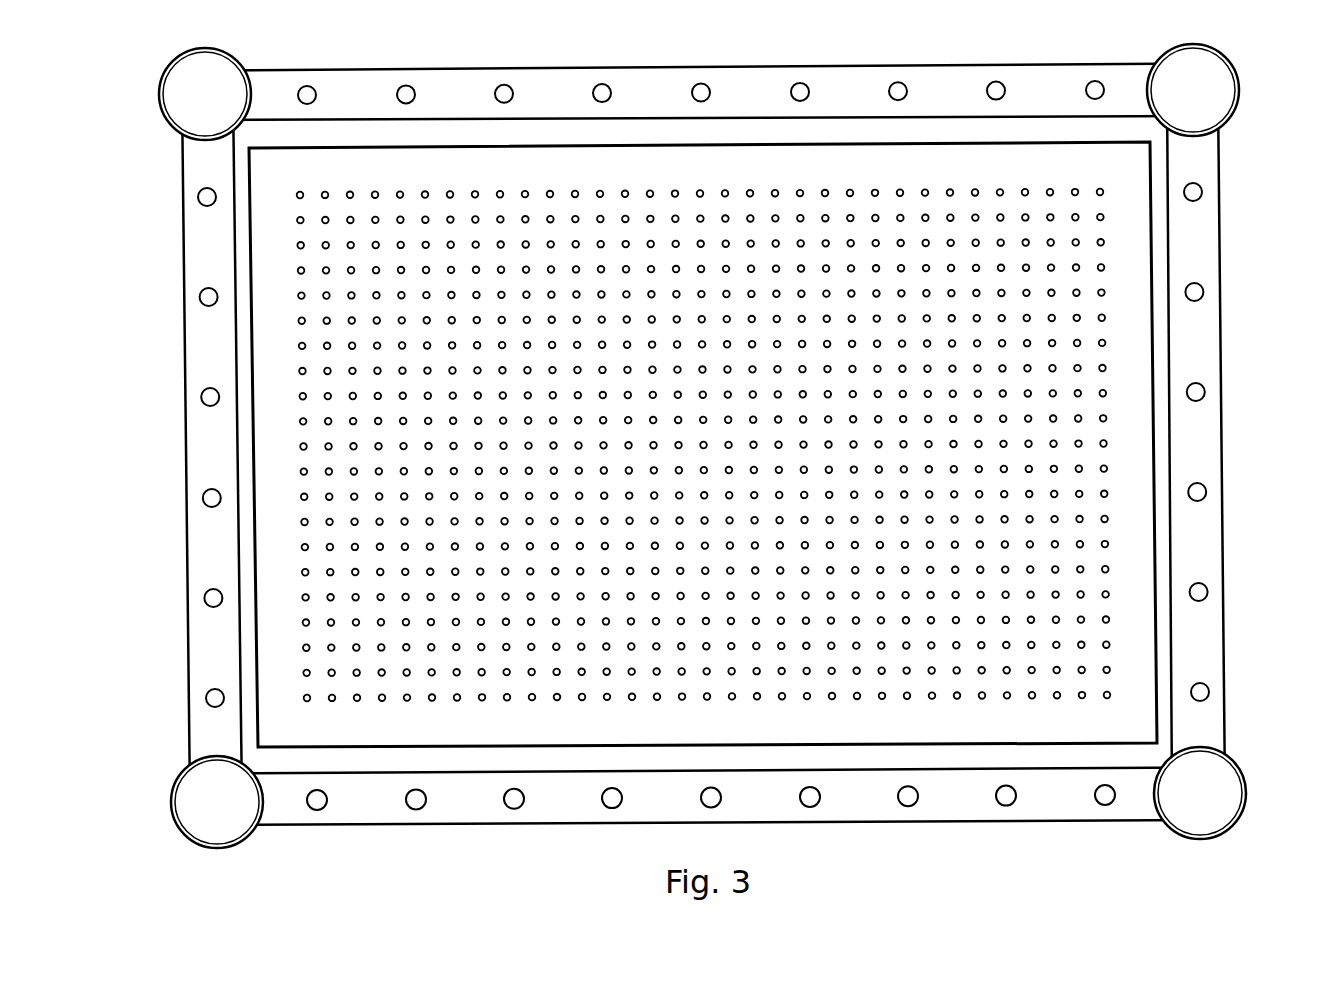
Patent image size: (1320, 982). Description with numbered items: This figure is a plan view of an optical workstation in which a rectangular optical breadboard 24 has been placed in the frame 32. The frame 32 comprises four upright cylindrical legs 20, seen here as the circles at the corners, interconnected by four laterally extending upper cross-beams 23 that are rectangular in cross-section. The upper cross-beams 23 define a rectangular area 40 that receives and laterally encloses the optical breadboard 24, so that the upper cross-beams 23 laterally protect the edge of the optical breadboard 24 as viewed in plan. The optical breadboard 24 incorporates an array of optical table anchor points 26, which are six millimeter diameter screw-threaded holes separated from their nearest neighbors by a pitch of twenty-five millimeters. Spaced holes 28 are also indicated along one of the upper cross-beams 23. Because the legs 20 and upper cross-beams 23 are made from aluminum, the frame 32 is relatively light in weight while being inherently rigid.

The upright cylindrical leg 20 is at (200, 94).
The upper cross-beam 23 is at (682, 446).
The optical breadboard 24 is at (863, 733).
The optical table anchor point 26 is at (1110, 517).
The spaced holes in bar 28 is at (1195, 192).
The frame 32 is at (162, 447).
The rectangular area 40 is at (247, 537).